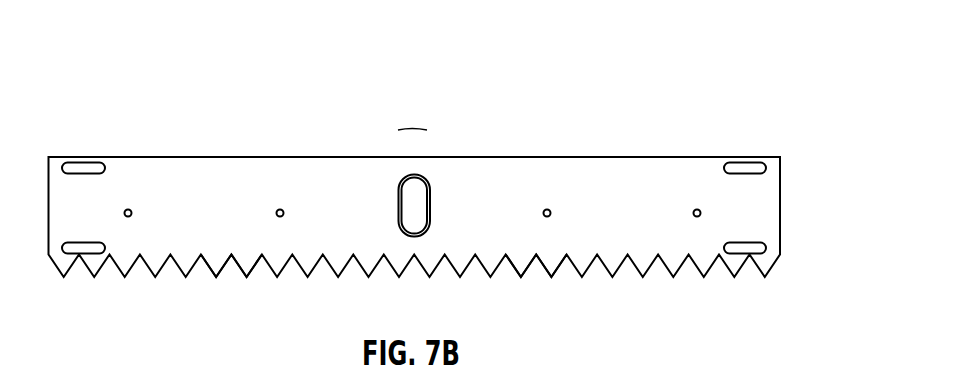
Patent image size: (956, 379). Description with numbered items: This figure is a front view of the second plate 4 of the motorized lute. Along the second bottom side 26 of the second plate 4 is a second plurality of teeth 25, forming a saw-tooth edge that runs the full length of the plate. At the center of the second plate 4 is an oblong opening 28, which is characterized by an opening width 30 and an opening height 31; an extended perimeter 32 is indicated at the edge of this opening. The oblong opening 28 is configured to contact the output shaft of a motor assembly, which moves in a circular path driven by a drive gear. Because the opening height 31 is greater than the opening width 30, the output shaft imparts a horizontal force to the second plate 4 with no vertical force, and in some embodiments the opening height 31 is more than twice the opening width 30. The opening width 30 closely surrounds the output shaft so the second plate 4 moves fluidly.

The second plate 4 is at (710, 65).
The second plurality of teeth 25 is at (545, 268).
The second bottom side 26 is at (225, 260).
The oblong opening 28 is at (412, 177).
The opening width 30 is at (413, 128).
The opening height 31 is at (792, 242).
The extended perimeter 32 is at (431, 176).